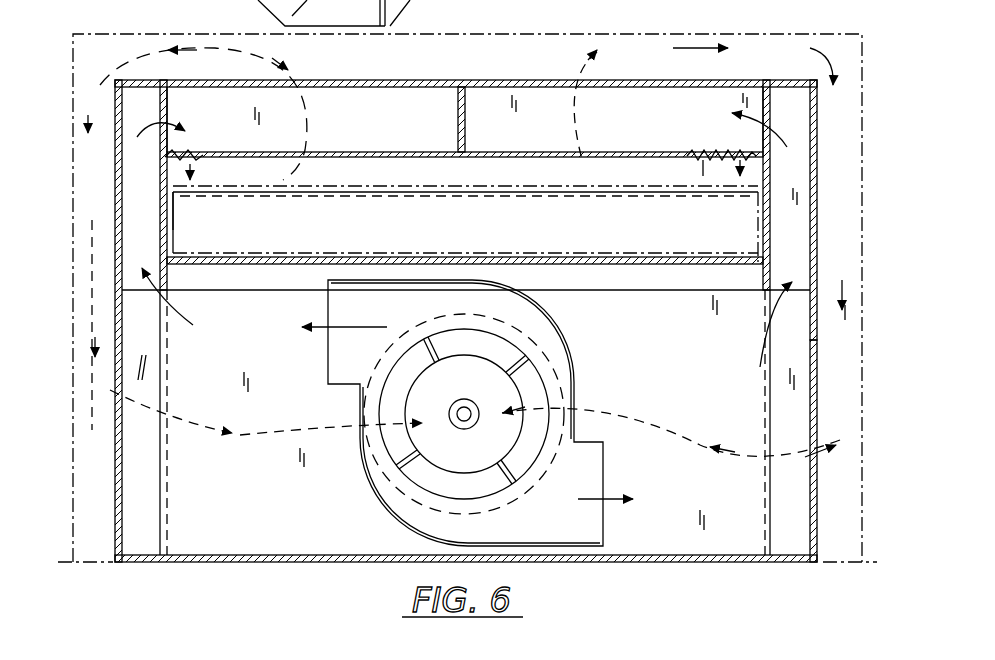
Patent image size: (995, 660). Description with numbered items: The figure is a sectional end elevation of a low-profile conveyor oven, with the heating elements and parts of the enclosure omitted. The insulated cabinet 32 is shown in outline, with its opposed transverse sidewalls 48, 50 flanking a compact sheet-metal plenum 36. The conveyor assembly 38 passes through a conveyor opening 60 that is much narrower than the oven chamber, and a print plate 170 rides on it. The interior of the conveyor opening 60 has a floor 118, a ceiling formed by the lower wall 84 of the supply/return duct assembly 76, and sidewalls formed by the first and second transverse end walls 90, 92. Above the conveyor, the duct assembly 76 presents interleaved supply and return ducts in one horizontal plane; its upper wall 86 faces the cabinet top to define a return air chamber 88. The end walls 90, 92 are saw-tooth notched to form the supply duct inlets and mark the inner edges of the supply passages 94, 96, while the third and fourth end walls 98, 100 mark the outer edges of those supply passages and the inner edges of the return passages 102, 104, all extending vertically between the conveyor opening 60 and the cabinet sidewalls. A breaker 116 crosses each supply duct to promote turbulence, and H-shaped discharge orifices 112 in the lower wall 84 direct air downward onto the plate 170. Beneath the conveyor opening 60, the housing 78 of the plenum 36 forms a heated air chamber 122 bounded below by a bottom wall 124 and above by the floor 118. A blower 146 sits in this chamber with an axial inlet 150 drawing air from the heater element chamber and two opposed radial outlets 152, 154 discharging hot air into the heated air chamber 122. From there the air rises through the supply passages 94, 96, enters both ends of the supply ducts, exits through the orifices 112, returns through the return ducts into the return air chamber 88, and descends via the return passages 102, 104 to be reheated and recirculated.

The cabinet 32 is at (863, 390).
The plenum 36 is at (820, 135).
The conveyor assembly 38 is at (757, 187).
The transverse sidewall 48 is at (72, 519).
The transverse sidewall 50 is at (865, 457).
The conveyor opening 60 is at (173, 190).
The supply/return duct assembly 76 is at (113, 442).
The housing 78 is at (772, 517).
The lower surface or wall 84 is at (512, 164).
The upper surface or wall 86 is at (364, 80).
The return air chamber 88 is at (440, 63).
The first transverse end wall 90 is at (770, 272).
The second transverse end wall 92 is at (158, 98).
The supply passage 94 is at (805, 245).
The supply passage 96 is at (155, 170).
The third transverse end wall 98 is at (818, 337).
The fourth transverse end wall 100 is at (113, 108).
The return passage 102 is at (855, 245).
The return passage 104 is at (113, 180).
The discharge orifices 112 is at (700, 150).
The breaker 116 is at (470, 88).
The floor 118 is at (648, 265).
The heated air chamber 122 is at (715, 330).
The bottom wall 124 is at (277, 563).
The blower 146 is at (573, 370).
The axial inlet 150 is at (428, 438).
The radial outlet 152 is at (330, 353).
The radial outlet 154 is at (593, 478).
The print plate 170 is at (390, 186).